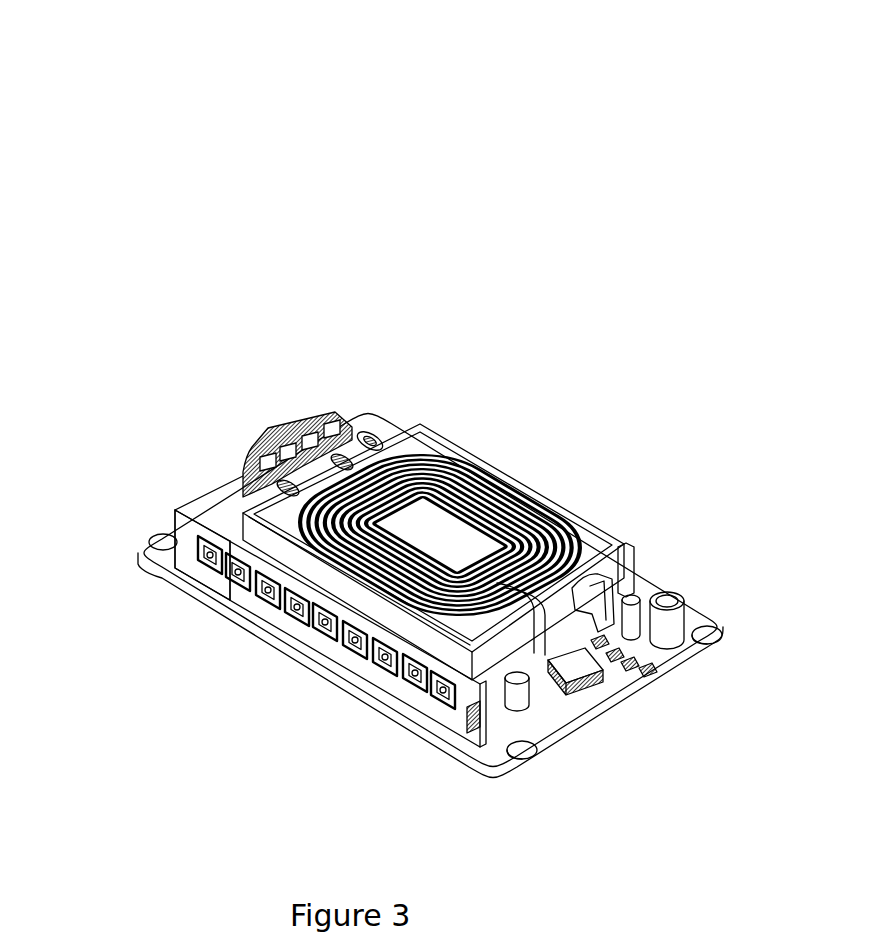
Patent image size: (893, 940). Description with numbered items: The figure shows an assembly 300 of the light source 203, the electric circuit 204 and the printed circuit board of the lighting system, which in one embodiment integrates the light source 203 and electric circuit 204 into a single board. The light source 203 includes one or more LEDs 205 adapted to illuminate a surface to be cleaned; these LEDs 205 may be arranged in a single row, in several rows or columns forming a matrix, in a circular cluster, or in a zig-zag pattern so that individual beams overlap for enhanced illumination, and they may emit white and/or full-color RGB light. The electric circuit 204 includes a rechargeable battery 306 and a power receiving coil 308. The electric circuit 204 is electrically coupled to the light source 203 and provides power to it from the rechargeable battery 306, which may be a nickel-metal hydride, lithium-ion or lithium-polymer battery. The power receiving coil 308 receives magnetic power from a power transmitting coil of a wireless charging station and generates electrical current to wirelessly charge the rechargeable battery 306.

The assembly 300 is at (110, 145).
The electric circuit 204 is at (651, 519).
The light source 203 is at (119, 516).
The LEDs 205 is at (355, 640).
The rechargeable battery 306 is at (427, 438).
The power receiving coil 308 is at (513, 520).